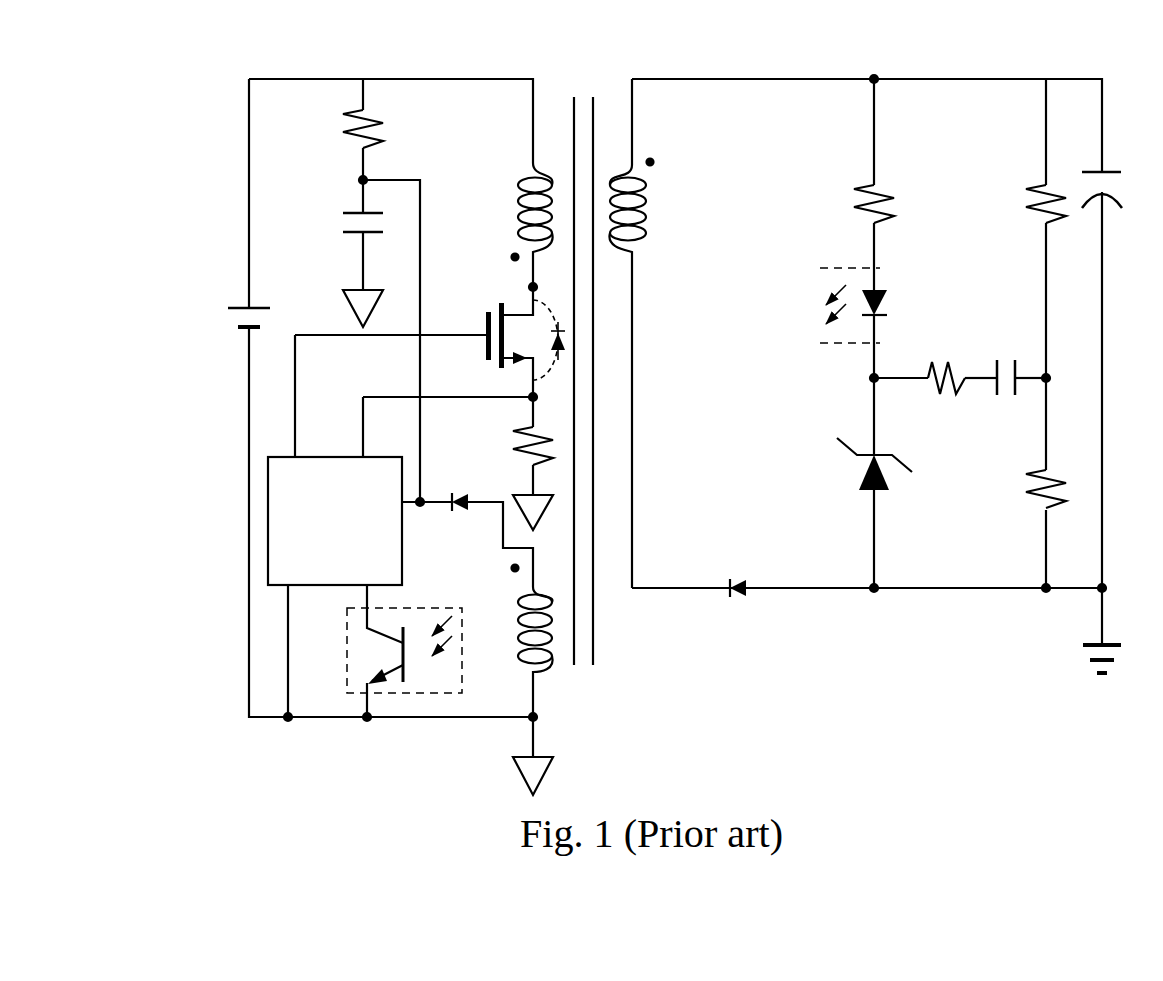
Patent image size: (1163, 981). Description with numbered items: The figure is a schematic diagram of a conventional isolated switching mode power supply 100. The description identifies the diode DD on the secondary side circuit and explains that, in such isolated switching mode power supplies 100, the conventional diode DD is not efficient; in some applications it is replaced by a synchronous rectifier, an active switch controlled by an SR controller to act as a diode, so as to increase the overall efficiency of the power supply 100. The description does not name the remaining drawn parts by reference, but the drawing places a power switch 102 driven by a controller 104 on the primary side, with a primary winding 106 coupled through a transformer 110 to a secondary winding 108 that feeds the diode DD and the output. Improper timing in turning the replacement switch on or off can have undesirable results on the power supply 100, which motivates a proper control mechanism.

The isolated switching mode power supply 100 is at (207, 44).
The power switch (MOSFET) 102 is at (487, 327).
The controller 104 is at (268, 500).
The primary winding 106 is at (517, 183).
The secondary winding 108 is at (648, 186).
The transformer 110 is at (596, 78).
The diode DD is at (735, 598).